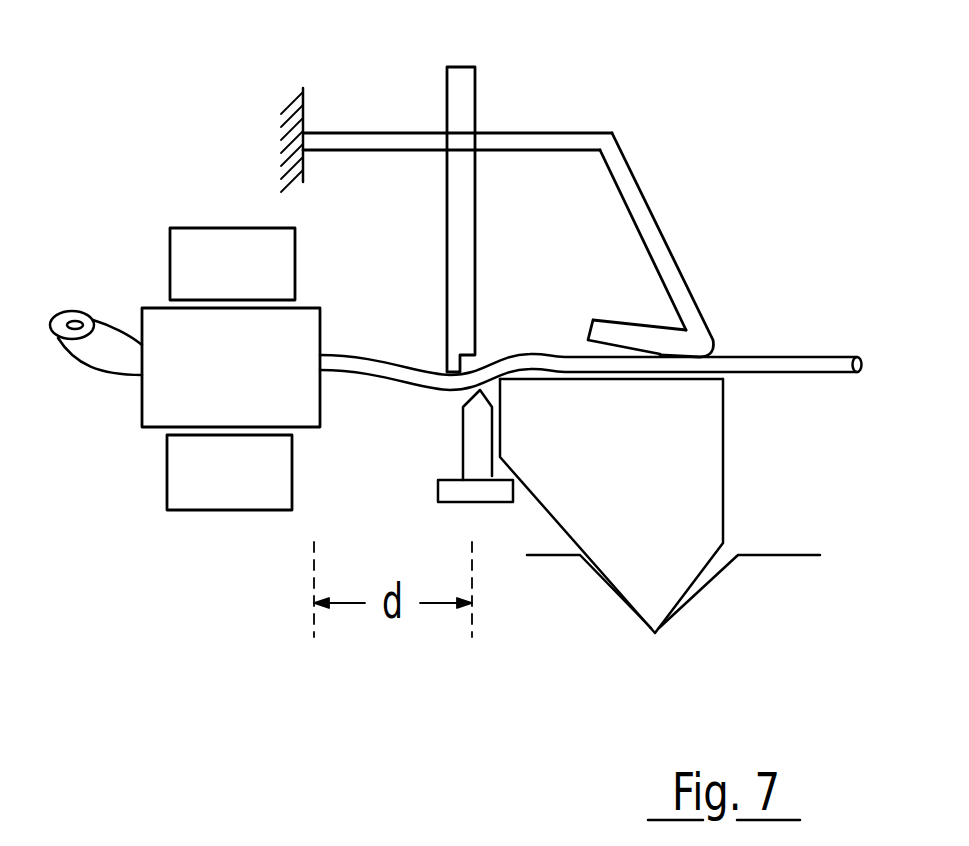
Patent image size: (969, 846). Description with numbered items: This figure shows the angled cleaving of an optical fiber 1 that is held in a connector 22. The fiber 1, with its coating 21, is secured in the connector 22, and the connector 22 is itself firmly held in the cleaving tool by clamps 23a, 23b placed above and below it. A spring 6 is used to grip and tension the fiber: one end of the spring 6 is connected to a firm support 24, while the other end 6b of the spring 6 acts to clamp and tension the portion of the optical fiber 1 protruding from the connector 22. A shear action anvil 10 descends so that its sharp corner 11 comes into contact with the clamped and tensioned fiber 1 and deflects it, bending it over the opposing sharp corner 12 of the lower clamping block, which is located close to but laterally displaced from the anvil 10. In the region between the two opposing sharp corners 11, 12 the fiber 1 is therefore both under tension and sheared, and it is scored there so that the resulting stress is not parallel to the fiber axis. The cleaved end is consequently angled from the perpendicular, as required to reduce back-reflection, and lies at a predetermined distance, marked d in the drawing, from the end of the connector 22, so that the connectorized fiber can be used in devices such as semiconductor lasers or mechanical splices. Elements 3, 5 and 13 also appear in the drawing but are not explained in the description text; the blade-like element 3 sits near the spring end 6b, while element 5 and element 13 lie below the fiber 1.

The optical fiber 1 is at (826, 347).
The cutting blade 3 is at (664, 342).
The support plate 5 is at (666, 396).
The spring 6 is at (576, 126).
The other end of the spring 6b is at (676, 228).
The shear action anvil 10 is at (466, 103).
The sharp corner of the anvil 11 is at (456, 356).
The sharp shear action corner 12 is at (522, 397).
The anvil 13 is at (479, 410).
The coating 21 is at (77, 376).
The connector 22 is at (218, 374).
The clamp 23a is at (220, 270).
The clamp 23b is at (208, 483).
The firm support 24 is at (270, 131).